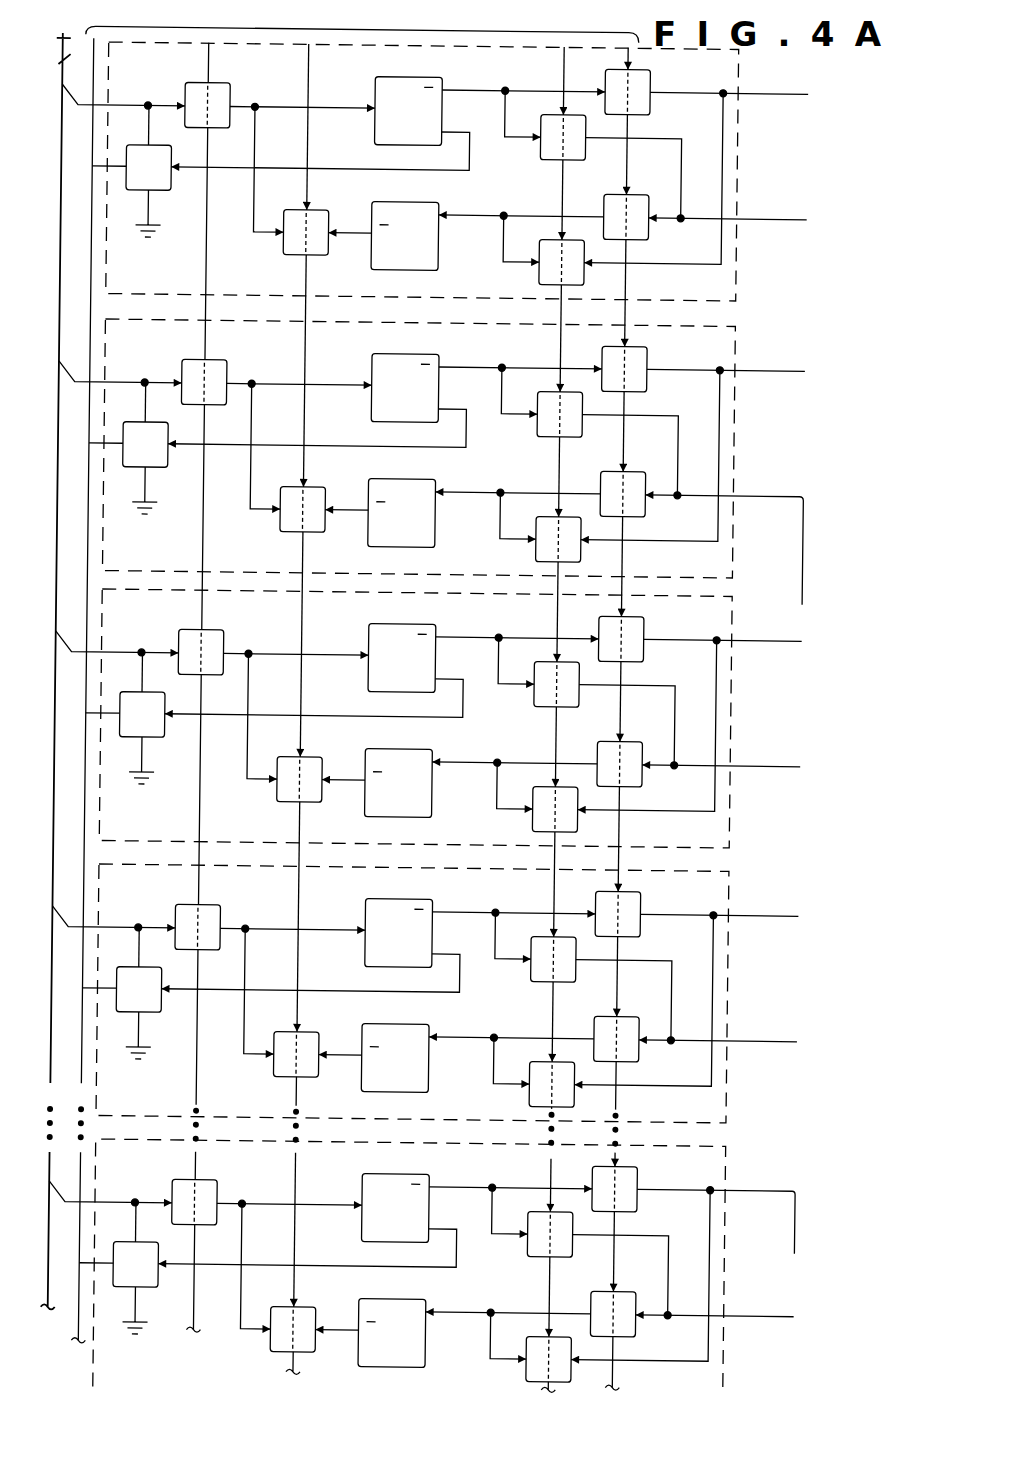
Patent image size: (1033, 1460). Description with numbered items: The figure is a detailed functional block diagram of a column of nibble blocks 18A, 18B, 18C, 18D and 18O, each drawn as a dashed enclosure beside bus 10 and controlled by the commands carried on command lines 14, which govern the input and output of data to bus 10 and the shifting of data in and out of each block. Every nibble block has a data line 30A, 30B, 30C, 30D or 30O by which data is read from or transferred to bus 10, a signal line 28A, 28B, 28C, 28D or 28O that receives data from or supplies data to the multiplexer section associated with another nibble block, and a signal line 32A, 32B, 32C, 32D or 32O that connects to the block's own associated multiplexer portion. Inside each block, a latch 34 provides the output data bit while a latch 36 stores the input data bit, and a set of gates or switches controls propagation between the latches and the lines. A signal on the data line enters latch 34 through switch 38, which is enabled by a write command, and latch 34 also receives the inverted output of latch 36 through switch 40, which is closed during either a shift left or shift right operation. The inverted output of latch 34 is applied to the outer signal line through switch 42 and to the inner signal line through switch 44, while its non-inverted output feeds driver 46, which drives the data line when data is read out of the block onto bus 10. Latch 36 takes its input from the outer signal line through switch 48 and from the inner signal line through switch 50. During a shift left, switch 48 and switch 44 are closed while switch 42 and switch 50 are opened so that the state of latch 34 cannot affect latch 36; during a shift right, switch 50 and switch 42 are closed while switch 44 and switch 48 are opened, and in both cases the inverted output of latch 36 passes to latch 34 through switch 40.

The bus 10 is at (61, 255).
The command lines 14 is at (393, 17).
The nibble block 18A is at (168, 281).
The nibble block 18B is at (418, 448).
The nibble block 18C is at (415, 718).
The nibble block 18D is at (412, 993).
The nibble block 18O is at (409, 1266).
The signal line 28A is at (743, 218).
The signal line 28B is at (723, 547).
The signal line 28C is at (721, 784).
The signal line 28D is at (717, 1059).
The signal line 28O is at (714, 1334).
The data line 30A is at (102, 100).
The data line 30B is at (121, 360).
The data line 30C is at (117, 630).
The data line 30D is at (114, 905).
The data line 30O is at (111, 1180).
The signal line 32A is at (742, 93).
The signal line 32B is at (725, 387).
The signal line 32C is at (722, 657).
The signal line 32D is at (719, 932).
The signal line 32O is at (715, 1220).
The latch 34 is at (438, 78).
The latch 36 is at (440, 271).
The switch 38 is at (220, 86).
The switch 40 is at (313, 257).
The switch 42 is at (651, 72).
The switch 44 is at (543, 158).
The driver 46 is at (157, 194).
The switch 48 is at (541, 280).
The switch 50 is at (641, 193).